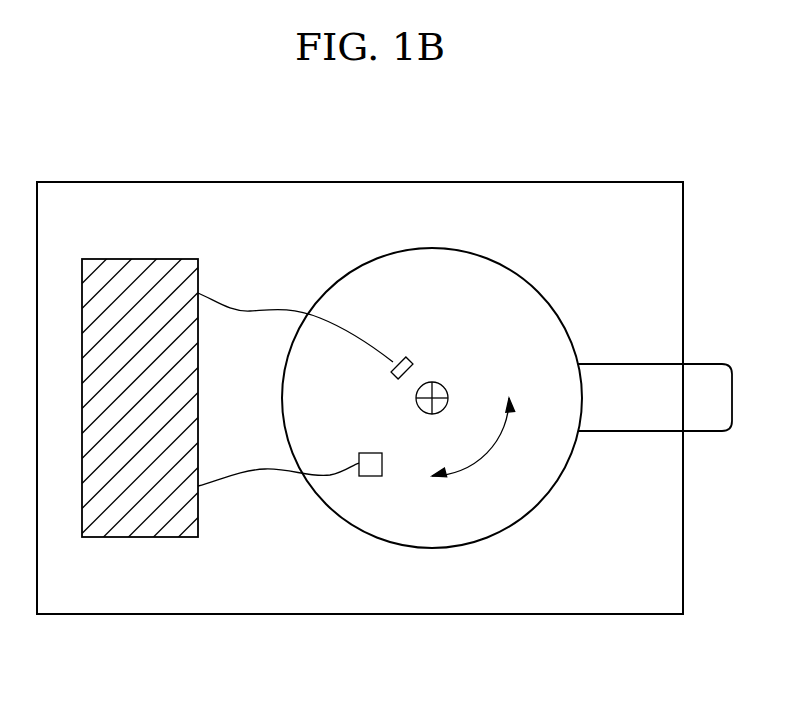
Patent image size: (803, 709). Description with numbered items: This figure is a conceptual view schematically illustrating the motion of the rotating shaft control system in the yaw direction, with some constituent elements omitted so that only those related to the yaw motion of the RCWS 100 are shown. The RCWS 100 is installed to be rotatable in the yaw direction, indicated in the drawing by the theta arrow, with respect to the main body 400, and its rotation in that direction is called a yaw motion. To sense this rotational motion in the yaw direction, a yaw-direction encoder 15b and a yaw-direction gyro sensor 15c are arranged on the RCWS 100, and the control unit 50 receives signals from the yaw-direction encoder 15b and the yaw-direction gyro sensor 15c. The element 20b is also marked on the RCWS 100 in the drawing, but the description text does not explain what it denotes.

The main body 400 is at (683, 241).
The control unit 50 is at (148, 547).
The RCWS 100 is at (432, 248).
The rotation center 20b is at (439, 382).
The yaw-direction encoder 15b is at (393, 360).
The yaw-direction gyro sensor 15c is at (371, 476).